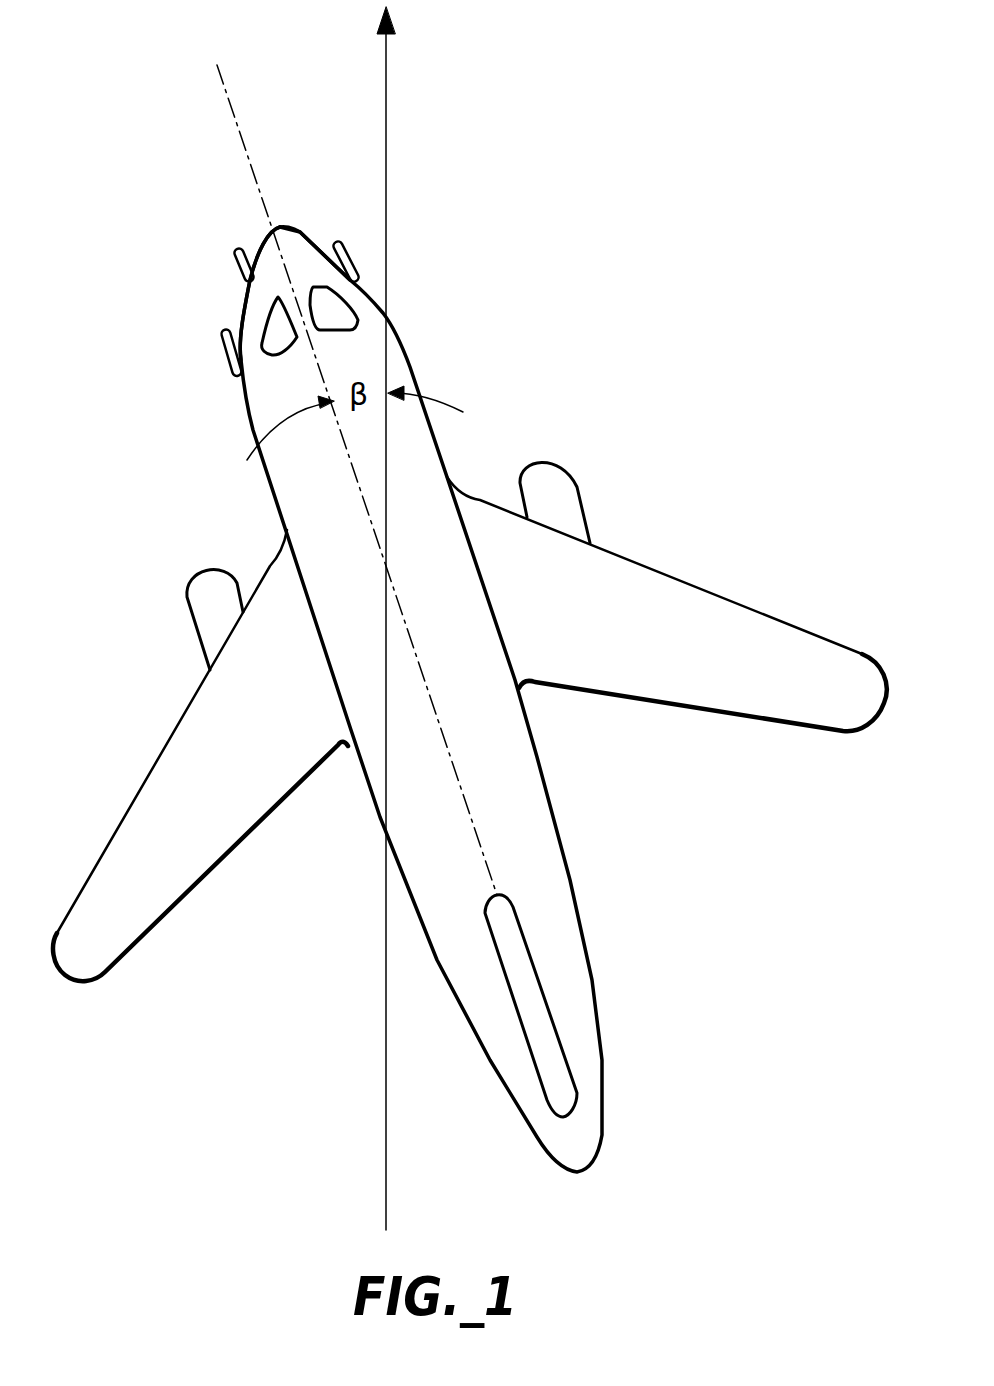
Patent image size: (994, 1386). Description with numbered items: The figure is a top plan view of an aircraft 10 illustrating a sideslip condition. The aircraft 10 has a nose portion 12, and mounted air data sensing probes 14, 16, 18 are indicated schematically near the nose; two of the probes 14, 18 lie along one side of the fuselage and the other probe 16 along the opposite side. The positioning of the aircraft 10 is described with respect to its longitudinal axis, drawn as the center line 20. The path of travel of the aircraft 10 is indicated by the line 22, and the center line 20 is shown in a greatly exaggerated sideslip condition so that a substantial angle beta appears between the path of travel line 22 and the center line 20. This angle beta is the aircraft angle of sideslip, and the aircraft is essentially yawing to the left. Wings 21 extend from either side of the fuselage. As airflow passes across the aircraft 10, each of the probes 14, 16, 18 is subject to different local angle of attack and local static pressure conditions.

The aircraft 10 is at (597, 937).
The nose portion 12 is at (272, 252).
The air data sensing probe 14 is at (237, 268).
The air data sensing probe 16 is at (358, 250).
The air data sensing probe 18 is at (226, 358).
The center line 20 is at (463, 800).
The wings 21 is at (700, 605).
The path of travel line 22 is at (385, 168).